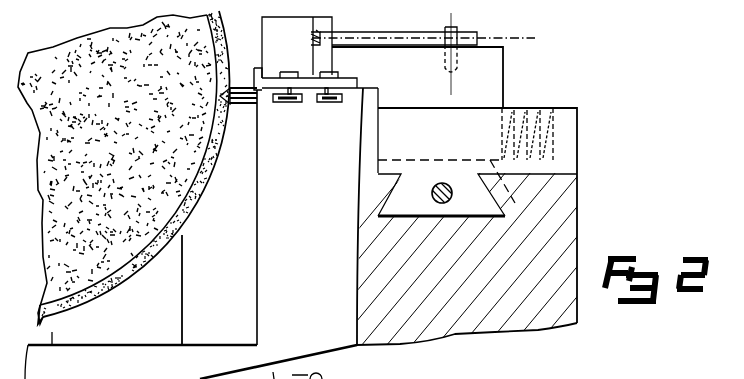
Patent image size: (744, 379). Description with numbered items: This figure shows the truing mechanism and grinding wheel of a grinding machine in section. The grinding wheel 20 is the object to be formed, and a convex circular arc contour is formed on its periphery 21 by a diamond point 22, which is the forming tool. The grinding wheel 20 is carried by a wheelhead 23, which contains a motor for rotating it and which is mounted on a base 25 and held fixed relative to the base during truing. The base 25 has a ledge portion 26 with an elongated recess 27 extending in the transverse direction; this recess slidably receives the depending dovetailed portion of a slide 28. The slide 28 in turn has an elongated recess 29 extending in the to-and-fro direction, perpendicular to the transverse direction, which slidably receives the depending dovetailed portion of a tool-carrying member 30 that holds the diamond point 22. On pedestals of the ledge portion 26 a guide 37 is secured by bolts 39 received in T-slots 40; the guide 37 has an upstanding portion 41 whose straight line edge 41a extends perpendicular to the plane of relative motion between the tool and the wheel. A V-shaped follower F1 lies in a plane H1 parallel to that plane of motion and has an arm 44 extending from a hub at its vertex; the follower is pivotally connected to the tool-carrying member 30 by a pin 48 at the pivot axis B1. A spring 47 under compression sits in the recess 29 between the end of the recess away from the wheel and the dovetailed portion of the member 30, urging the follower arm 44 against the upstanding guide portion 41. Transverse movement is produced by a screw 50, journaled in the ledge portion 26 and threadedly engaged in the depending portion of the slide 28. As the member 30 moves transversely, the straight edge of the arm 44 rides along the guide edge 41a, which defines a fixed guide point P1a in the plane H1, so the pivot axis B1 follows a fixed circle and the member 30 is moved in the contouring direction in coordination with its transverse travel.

The grinding wheel 20 is at (149, 139).
The periphery 21 is at (186, 228).
The diamond point 22 is at (217, 95).
The wheelhead 23 is at (155, 325).
The base 25 is at (202, 345).
The ledge portion 26 is at (432, 267).
The elongated recess 27 is at (468, 219).
The slide 28 is at (578, 150).
The elongated recess 29 is at (513, 196).
The tool-carrying member 30 is at (505, 80).
The guide 37 is at (260, 61).
The bolts 39 is at (289, 103).
The T-slots 40 is at (295, 103).
The upstanding portion 41 is at (313, 41).
The straight line edge 41a is at (335, 57).
The arm 44 is at (407, 31).
The spring 47 is at (537, 110).
The pin 48 is at (458, 68).
The screw 50 is at (452, 196).
The guide point P1a is at (332, 33).
The V-shaped follower F1 is at (477, 31).
The plane H1 is at (506, 38).
The pivot axis B1 is at (451, 90).